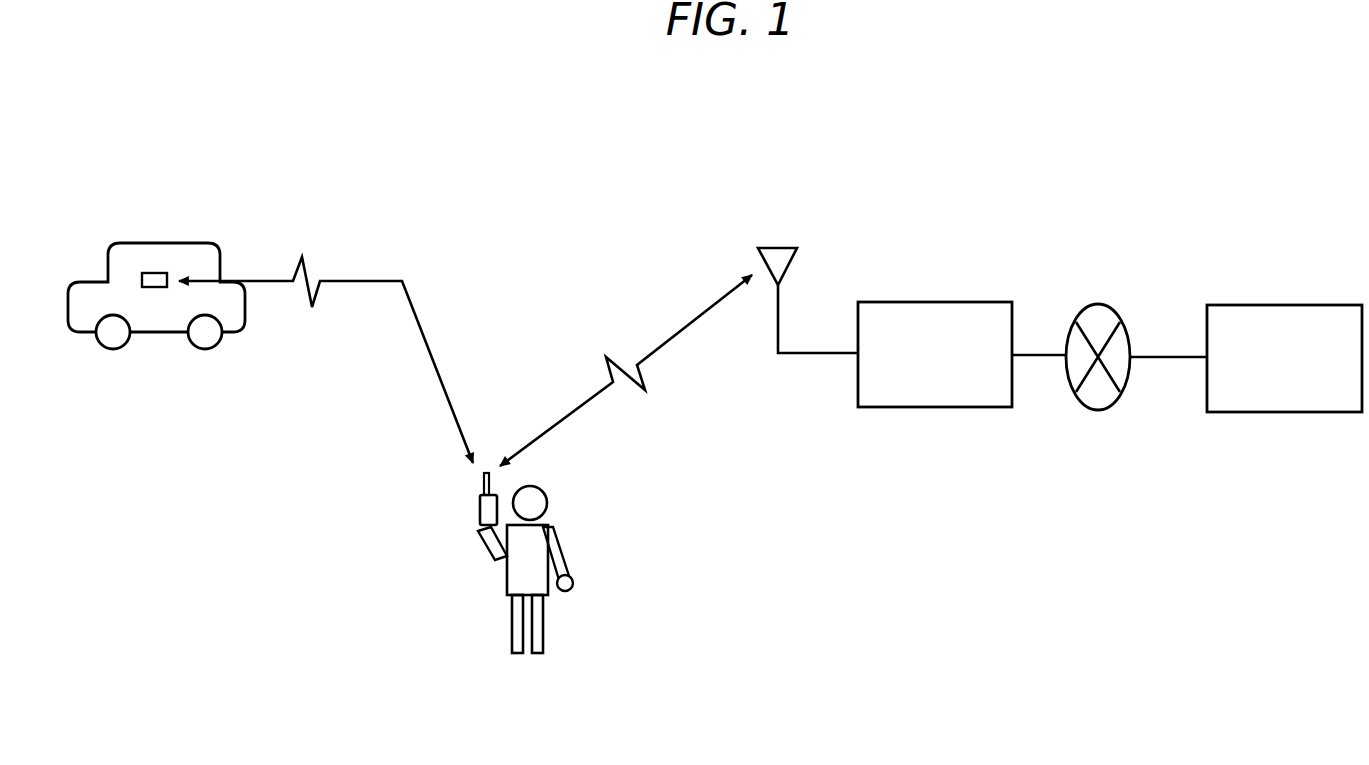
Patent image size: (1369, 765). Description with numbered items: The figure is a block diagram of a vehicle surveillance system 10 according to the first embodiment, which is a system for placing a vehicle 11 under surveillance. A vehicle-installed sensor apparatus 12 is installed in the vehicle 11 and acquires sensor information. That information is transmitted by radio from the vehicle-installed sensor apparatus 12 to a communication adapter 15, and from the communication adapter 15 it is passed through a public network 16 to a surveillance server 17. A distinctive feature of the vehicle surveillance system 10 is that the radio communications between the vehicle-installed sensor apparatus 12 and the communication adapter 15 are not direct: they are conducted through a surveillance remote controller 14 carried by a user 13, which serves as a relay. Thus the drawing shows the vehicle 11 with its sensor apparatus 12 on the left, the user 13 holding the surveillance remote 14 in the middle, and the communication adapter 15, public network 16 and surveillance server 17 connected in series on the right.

The vehicle surveillance system 10 is at (236, 158).
The vehicle 11 is at (161, 318).
The vehicle-installed sensor apparatus 12 is at (157, 273).
The user 13 is at (564, 548).
The surveillance remote controller 14 is at (478, 505).
The communication adapter 15 is at (937, 302).
The public network 16 is at (1100, 305).
The surveillance server 17 is at (1285, 305).